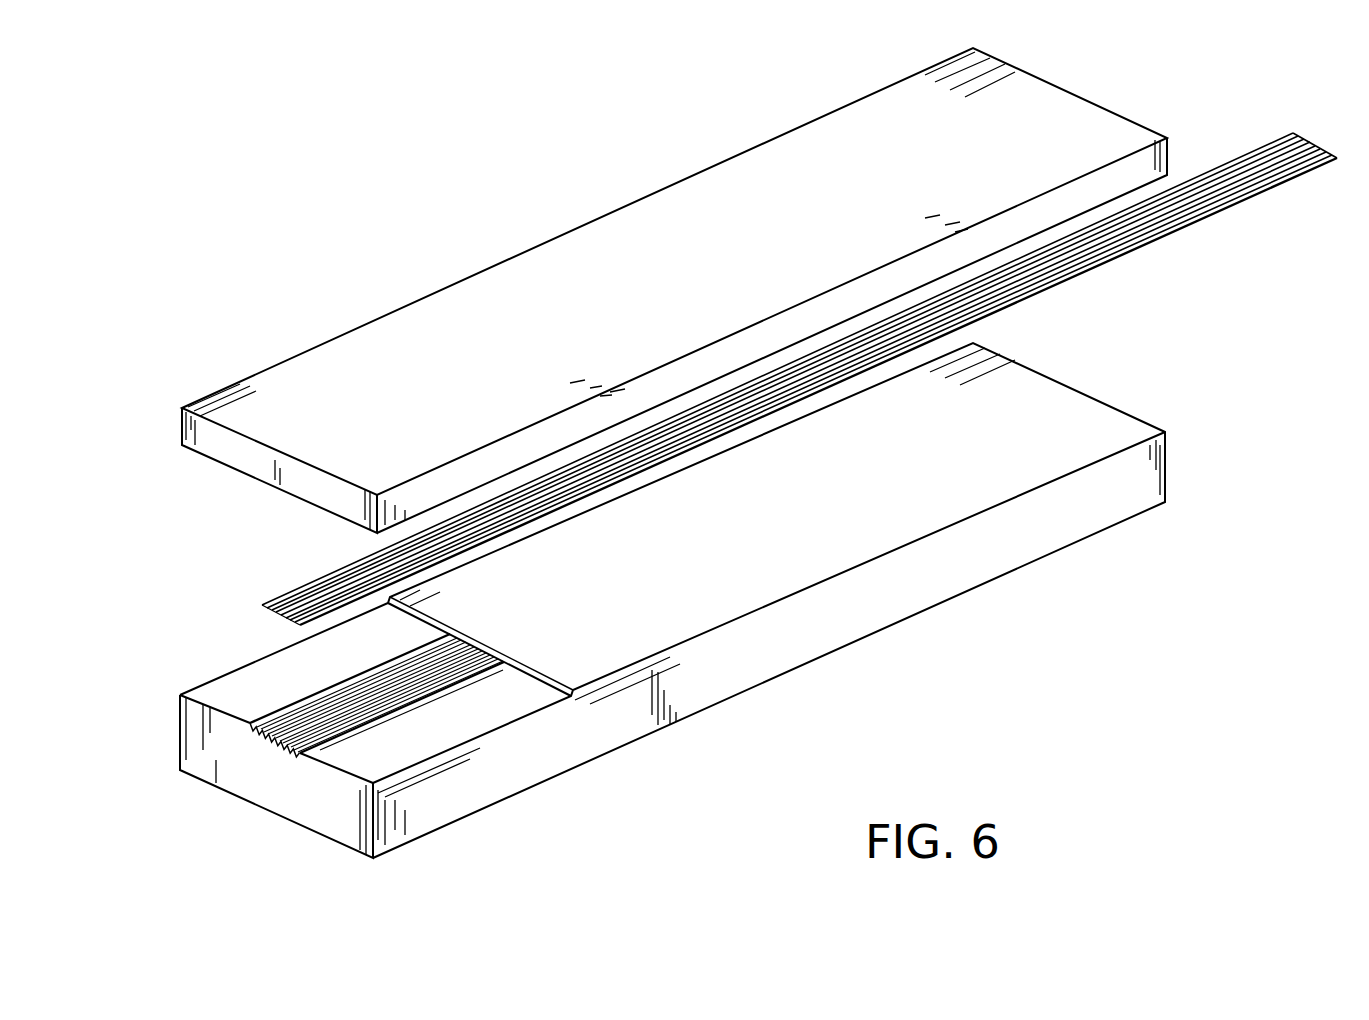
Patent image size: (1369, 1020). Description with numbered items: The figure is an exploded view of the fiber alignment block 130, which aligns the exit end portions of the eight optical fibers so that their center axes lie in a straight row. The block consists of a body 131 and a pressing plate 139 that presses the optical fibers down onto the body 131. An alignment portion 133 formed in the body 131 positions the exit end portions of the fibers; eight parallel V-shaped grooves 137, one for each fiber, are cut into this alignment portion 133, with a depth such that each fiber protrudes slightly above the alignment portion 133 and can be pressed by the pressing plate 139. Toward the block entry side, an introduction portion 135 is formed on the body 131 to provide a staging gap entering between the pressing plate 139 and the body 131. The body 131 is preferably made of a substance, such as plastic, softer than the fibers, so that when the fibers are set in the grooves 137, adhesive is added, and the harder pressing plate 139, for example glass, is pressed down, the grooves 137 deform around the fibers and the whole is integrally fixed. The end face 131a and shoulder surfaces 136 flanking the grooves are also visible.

The fiber alignment block 130 is at (1090, 605).
The body 131 is at (1098, 394).
The end face of substrate 131a is at (310, 803).
The alignment portion 133 is at (395, 713).
The introduction portion 135 is at (704, 630).
The shoulder portions 136 is at (203, 692).
The V-shaped grooves 137 is at (283, 750).
The pressing plate 139 is at (697, 195).